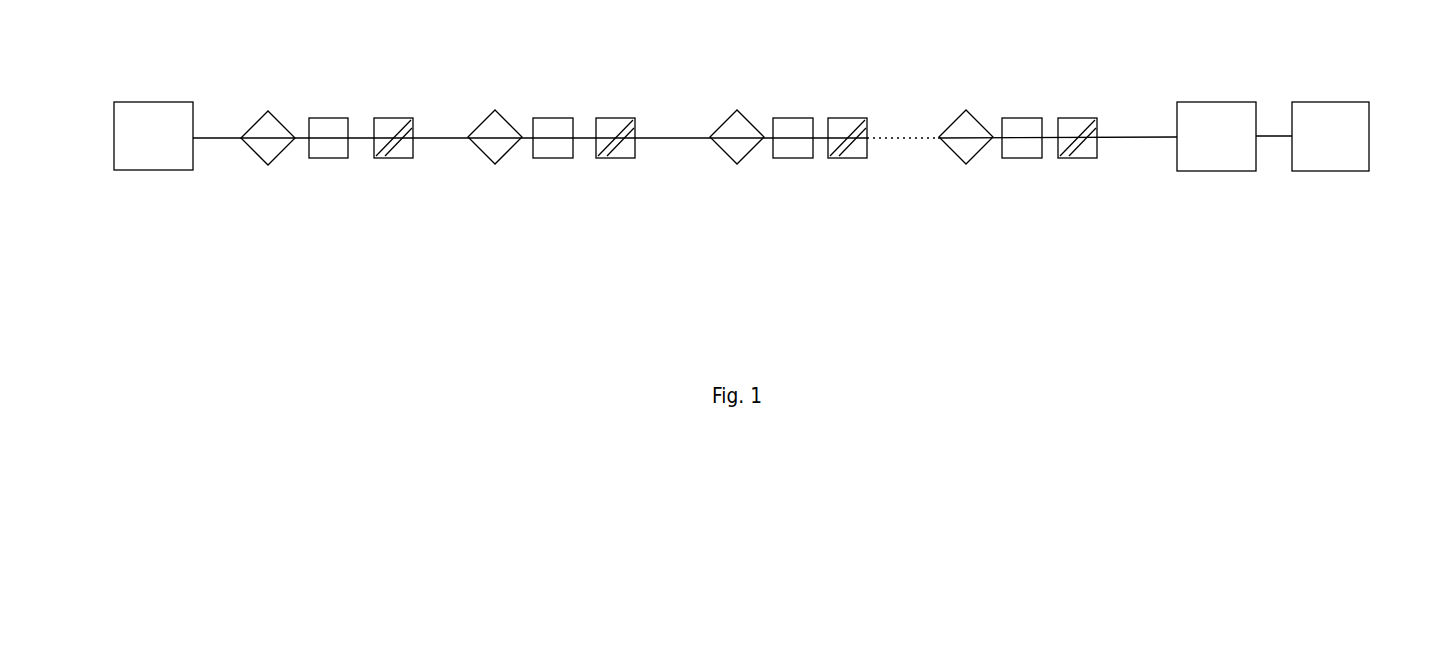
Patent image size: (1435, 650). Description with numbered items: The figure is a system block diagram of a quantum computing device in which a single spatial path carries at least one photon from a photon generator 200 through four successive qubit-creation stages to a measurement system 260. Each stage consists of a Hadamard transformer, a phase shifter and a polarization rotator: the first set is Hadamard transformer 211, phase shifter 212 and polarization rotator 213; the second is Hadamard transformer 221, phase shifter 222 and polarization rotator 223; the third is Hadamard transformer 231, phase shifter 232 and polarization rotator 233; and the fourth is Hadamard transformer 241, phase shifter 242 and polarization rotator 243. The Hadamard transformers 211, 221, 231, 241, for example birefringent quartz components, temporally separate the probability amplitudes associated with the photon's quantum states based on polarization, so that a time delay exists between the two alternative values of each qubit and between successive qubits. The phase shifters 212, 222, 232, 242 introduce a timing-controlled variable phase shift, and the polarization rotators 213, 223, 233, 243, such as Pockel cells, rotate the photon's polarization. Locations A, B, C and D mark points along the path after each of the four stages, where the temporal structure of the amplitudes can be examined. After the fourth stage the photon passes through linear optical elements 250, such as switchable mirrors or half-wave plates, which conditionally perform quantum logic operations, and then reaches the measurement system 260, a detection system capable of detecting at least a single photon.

The photon generator 200 is at (149, 209).
The Hadamard transformer 211 is at (268, 176).
The phase shifter 212 is at (333, 176).
The polarization rotator 213 is at (395, 176).
The Hadamard transformer 221 is at (495, 176).
The phase shifter 222 is at (558, 176).
The polarization rotator 223 is at (617, 176).
The Hadamard transformer 231 is at (737, 176).
The phase shifter 232 is at (800, 176).
The polarization rotator 233 is at (862, 176).
The Hadamard transformer 241 is at (969, 176).
The phase shifter 242 is at (1033, 176).
The polarization rotator 243 is at (1095, 176).
The linear optical elements 250 is at (1216, 221).
The measurement system 260 is at (1356, 208).
The location A is at (446, 126).
The location B is at (673, 126).
The location C is at (903, 126).
The location D is at (1130, 126).